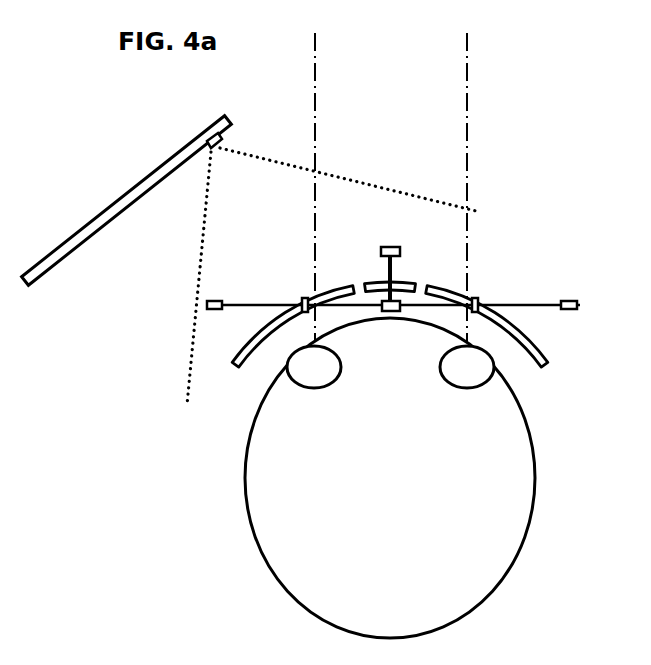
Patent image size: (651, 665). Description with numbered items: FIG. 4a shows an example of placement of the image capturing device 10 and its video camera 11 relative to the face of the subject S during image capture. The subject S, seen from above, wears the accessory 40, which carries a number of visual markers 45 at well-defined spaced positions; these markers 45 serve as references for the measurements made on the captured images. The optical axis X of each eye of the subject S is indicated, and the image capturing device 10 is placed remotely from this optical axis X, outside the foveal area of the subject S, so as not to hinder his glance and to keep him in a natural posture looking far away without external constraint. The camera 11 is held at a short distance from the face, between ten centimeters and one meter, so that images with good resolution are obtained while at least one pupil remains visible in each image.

The image capturing device 10 is at (133, 192).
The video camera 11 is at (218, 143).
The accessory 40 is at (545, 342).
The visual markers 45 is at (219, 302).
The subject S is at (519, 477).
The optical axis X is at (314, 104).